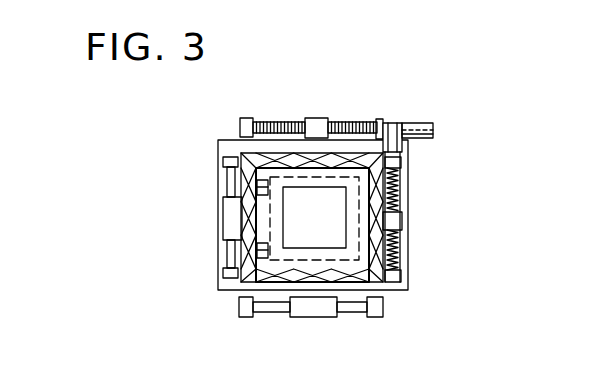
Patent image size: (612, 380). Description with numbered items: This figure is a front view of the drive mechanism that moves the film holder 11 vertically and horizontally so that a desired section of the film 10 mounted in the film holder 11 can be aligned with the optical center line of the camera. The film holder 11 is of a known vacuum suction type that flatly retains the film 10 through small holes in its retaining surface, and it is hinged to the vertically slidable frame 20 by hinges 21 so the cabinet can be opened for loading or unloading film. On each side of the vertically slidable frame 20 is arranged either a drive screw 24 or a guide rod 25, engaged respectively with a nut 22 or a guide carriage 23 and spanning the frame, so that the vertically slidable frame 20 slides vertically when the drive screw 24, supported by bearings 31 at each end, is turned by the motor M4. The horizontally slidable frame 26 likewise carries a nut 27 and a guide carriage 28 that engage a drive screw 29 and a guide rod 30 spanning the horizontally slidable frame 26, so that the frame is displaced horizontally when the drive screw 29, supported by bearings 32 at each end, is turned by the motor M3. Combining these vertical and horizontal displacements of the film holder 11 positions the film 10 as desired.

The film 10 is at (327, 230).
The film holder 11 is at (362, 184).
The vertically slidable frame 20 is at (374, 200).
The hinges 21 is at (257, 185).
The nut 22 is at (402, 221).
The guide carriage 23 is at (223, 210).
The drive screw 24 is at (398, 248).
The guide rod 25 is at (227, 257).
The horizontally slidable frame 26 is at (226, 140).
The nut 27 is at (328, 112).
The guide carriage 28 is at (321, 314).
The drive screw 29 is at (281, 122).
The lead screw 30 is at (268, 312).
The bearings 31 is at (401, 162).
The bearing 32 is at (248, 118).
The motor M3 is at (428, 123).
The motor M4 is at (397, 123).